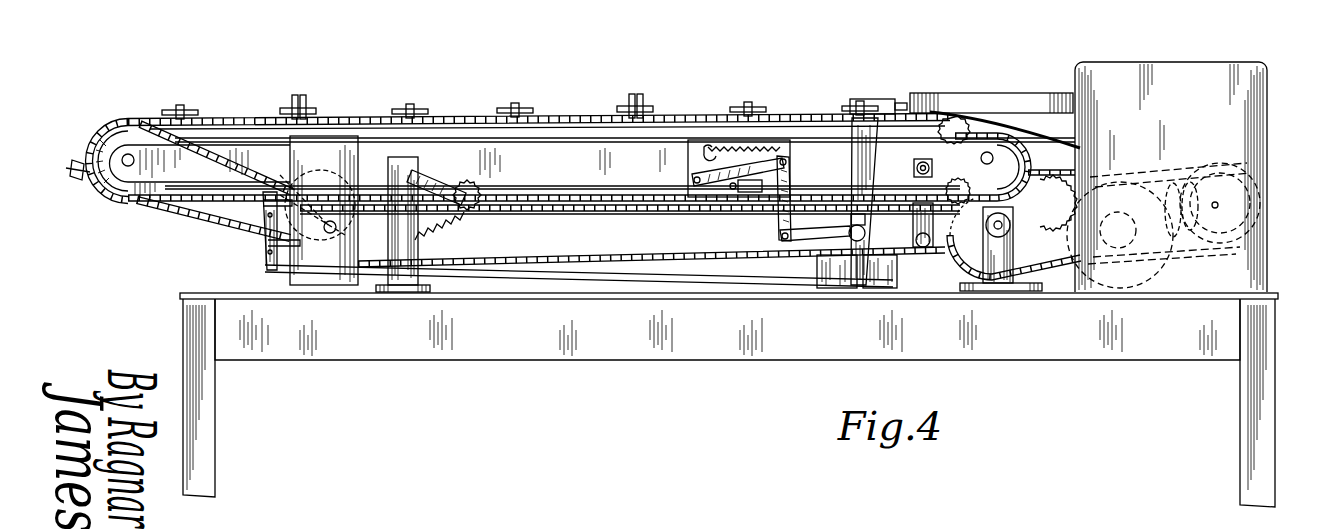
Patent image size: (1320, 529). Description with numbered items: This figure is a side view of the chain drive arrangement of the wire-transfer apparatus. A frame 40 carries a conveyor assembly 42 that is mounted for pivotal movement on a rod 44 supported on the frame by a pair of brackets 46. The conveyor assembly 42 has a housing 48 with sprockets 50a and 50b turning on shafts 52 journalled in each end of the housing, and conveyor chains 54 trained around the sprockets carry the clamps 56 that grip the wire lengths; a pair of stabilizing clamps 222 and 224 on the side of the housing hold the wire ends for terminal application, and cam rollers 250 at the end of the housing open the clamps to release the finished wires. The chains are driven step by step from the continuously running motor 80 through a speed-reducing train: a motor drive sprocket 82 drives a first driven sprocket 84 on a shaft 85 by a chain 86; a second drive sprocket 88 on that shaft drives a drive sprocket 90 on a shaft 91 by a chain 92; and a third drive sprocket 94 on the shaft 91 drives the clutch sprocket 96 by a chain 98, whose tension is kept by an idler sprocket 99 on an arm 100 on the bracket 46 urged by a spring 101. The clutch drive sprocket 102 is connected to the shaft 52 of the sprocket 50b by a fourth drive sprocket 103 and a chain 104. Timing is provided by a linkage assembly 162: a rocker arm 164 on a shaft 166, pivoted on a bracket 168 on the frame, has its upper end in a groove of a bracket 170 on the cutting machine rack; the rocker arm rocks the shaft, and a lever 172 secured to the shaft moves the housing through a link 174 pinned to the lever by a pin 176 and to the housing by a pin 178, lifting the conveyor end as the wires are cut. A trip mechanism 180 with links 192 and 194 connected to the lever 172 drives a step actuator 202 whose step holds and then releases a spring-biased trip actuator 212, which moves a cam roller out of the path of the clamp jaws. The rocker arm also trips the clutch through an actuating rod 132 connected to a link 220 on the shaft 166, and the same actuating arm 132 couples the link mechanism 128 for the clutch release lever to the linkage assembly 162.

The frame 40 is at (672, 356).
The conveyor assembly 42 is at (752, 74).
The rod 44 is at (362, 160).
The brackets 46 is at (420, 235).
The housing 48 is at (570, 150).
The sprocket 50a is at (978, 116).
The sprocket 50b is at (133, 198).
The shafts 52 is at (129, 154).
The conveyor chains 54 is at (234, 118).
The clamps 56 is at (76, 170).
The motor 80 is at (1140, 292).
The motor drive sprocket 82 is at (1135, 248).
The first driven sprocket 84 is at (1240, 168).
The shaft 85 is at (1220, 205).
The chain 86 is at (1200, 250).
The second drive sprocket 88 is at (1190, 182).
The drive sprocket 90 is at (1045, 198).
The shaft 91 is at (1006, 228).
The chain 92 is at (1095, 255).
The third drive sprocket 94 is at (978, 246).
The clutch sprocket 96 is at (372, 292).
The chain 98 is at (616, 254).
The idler sprocket 99 is at (481, 183).
The arm 100 is at (432, 176).
The spring 101 is at (452, 228).
The drive sprocket 102 is at (334, 190).
The fourth drive sprocket 103 is at (125, 187).
The chain 104 is at (216, 224).
The link mechanism 128 is at (255, 265).
The actuating arm 132 is at (605, 285).
The linkage assembly 162 is at (826, 110).
The rocker arm 164 is at (850, 166).
The shaft 166 is at (850, 232).
The bracket 168 is at (825, 262).
The bracket 170 is at (850, 100).
The lever 172 is at (912, 234).
The link 174 is at (918, 178).
The pin 176 is at (922, 262).
The pin 178 is at (981, 158).
The trip mechanism 180 is at (730, 188).
The link 192 is at (790, 155).
The link 194 is at (784, 242).
The step actuator 202 is at (750, 192).
The trip actuator 212 is at (700, 150).
The link 220 is at (856, 262).
The clamp 222 is at (647, 90).
The clamp 224 is at (308, 90).
The cam rollers 250 is at (92, 136).